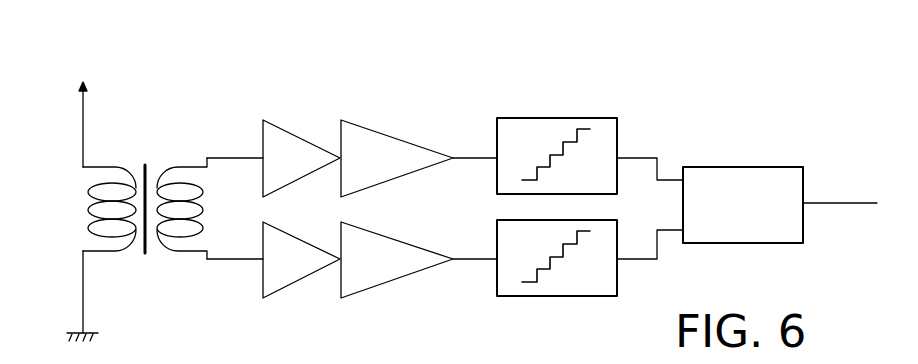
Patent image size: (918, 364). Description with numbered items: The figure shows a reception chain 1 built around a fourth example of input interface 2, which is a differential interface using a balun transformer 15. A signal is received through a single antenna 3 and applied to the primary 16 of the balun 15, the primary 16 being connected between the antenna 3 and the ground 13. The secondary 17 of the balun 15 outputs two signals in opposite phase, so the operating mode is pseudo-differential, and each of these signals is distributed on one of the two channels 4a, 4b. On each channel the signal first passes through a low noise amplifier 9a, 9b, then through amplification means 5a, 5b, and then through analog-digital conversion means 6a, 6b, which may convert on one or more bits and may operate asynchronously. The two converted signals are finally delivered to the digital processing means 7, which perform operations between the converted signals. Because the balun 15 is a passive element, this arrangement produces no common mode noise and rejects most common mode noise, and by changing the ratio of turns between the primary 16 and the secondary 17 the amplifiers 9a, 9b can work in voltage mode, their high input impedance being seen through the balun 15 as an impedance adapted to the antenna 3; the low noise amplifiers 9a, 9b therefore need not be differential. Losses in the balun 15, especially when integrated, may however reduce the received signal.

The reception chain 1 is at (697, 70).
The input interface 2 is at (156, 215).
The antenna 3 is at (83, 123).
The ground 13 is at (98, 334).
The balun transformer 15 is at (155, 157).
The primary 16 is at (113, 167).
The secondary 17 is at (173, 253).
The low noise amplifier 9a is at (305, 138).
The low noise amplifier 9b is at (303, 271).
The amplification means 5a is at (418, 141).
The amplification means 5b is at (421, 272).
The channel 4a is at (477, 158).
The channel 4b is at (480, 259).
The analog-digital conversion means 6a is at (537, 123).
The analog-digital conversion means 6b is at (570, 287).
The digital processing means 7 is at (738, 242).